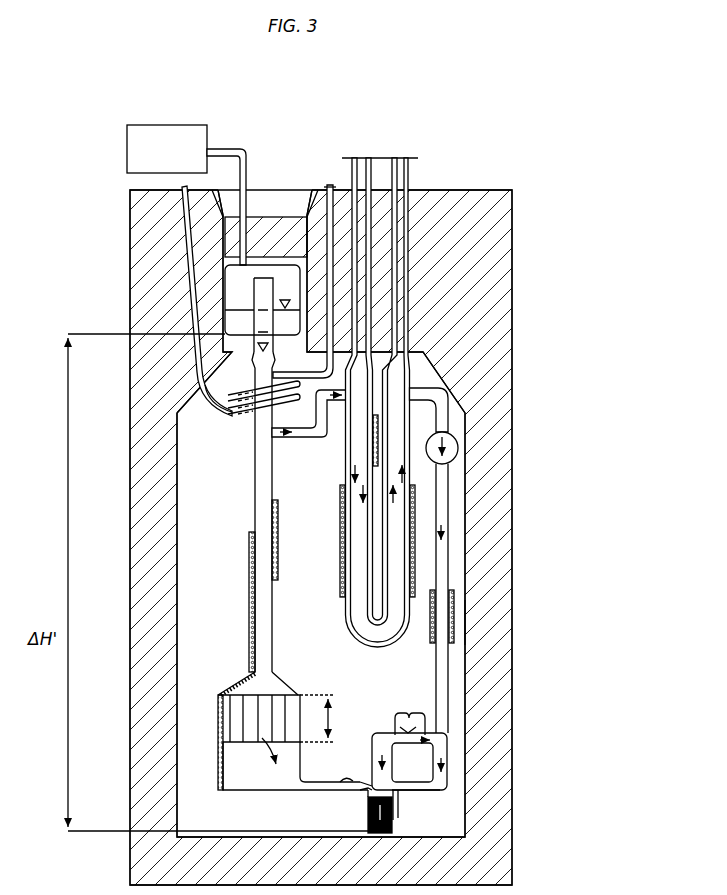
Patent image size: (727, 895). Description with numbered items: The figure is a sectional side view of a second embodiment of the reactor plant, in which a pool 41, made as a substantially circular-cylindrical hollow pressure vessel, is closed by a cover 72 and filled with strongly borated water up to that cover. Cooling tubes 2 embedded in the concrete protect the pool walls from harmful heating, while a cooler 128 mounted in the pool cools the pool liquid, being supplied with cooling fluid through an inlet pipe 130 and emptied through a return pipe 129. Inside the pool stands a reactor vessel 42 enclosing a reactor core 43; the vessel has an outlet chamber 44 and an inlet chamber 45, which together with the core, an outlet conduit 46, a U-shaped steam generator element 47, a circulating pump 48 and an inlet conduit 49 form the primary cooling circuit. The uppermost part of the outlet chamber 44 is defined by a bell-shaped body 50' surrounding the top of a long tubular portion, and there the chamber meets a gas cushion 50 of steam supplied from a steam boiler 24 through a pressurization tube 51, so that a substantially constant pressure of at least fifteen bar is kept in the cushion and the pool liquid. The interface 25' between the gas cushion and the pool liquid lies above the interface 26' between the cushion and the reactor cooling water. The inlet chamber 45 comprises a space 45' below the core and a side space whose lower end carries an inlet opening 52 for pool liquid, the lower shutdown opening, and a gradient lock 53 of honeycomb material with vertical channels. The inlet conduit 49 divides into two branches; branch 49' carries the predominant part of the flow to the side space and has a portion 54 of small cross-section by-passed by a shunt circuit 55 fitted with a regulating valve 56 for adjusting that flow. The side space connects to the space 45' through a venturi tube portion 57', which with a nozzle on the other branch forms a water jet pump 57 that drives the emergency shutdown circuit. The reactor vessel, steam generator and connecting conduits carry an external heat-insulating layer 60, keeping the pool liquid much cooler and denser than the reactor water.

The cooling tubes 2 is at (468, 637).
The steam boiler 24 is at (195, 135).
The interface 25' is at (181, 315).
The interface 26' is at (244, 365).
The pool 41 is at (187, 553).
The reactor vessel 42 is at (241, 651).
The reactor core 43 is at (247, 719).
The outlet chamber 44 is at (262, 568).
The inlet chamber 45 is at (295, 782).
The space 45' is at (330, 762).
The outlet conduit 46 is at (311, 438).
The U-shaped steam generator element 47 is at (336, 555).
The circulating pump 48 is at (450, 462).
The inlet conduit 49 is at (464, 618).
The branch 49' is at (413, 761).
The gas cushion 50 is at (195, 296).
The bell-shaped body 50' is at (176, 293).
The pressurization tube 51 is at (247, 160).
The inlet opening 52 is at (380, 838).
The gradient lock 53 is at (397, 822).
The portion of relatively small cross-section 54 is at (410, 745).
The shunt circuit 55 is at (405, 713).
The regulating valve 56 is at (412, 710).
The water jet pump 57 is at (350, 807).
The tube portion 57' is at (320, 797).
The heat-insulating layer 60 is at (218, 767).
The cover 72 is at (277, 217).
The cooler 128 is at (237, 414).
The return pipe 129 is at (185, 187).
The inlet pipe 130 is at (330, 183).